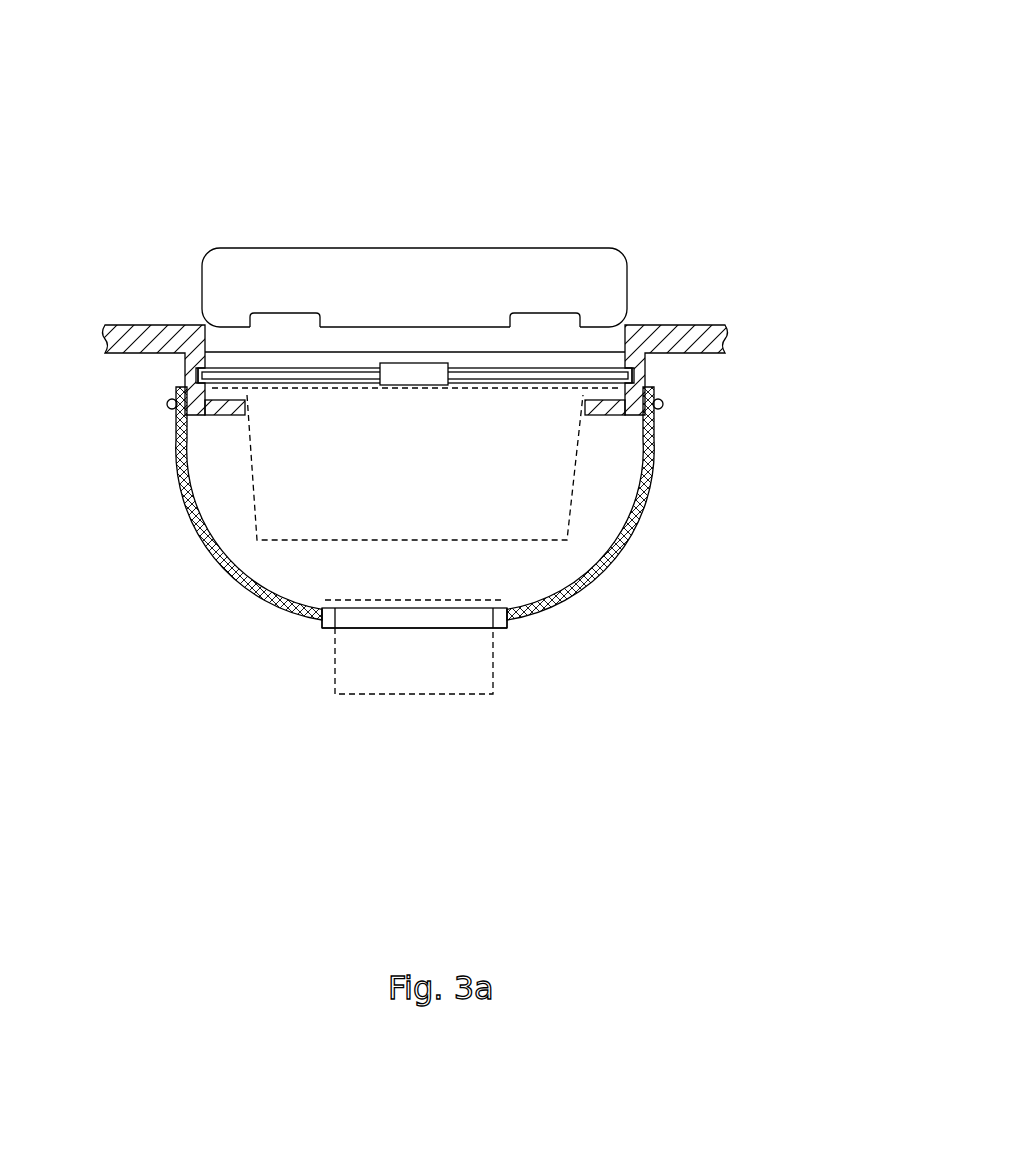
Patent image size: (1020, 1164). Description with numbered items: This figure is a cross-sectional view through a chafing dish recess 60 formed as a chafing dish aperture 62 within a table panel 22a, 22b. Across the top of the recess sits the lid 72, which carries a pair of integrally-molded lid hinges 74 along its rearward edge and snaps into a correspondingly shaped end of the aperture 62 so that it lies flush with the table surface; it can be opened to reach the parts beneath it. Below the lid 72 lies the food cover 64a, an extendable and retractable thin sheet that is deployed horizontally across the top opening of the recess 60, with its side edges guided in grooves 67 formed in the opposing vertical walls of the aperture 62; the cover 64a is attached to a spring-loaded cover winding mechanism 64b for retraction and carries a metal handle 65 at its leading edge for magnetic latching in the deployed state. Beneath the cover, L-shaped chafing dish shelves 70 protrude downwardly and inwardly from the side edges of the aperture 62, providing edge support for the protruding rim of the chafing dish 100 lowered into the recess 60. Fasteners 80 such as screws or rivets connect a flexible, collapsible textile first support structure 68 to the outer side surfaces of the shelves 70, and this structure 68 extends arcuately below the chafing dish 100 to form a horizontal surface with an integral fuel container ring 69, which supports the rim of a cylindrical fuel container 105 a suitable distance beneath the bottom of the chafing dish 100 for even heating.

The chafing dish recess 60 is at (541, 106).
The lid 72 is at (280, 248).
The lid hinges 74 is at (275, 313).
The table panel 22a is at (132, 325).
The table panel 22b is at (707, 325).
The chafing dish shelves 70 is at (220, 413).
The fasteners 80 is at (173, 404).
The first support structure 68 is at (200, 540).
The food cover 64a is at (362, 381).
The cover winding mechanism 64b is at (392, 362).
The metal handle 65 is at (435, 373).
The grooves 67 is at (197, 372).
The chafing dish aperture 62 is at (247, 412).
The fuel container 105 is at (455, 600).
The fuel container ring 69 is at (322, 628).
The chafing dish 100 is at (327, 620).